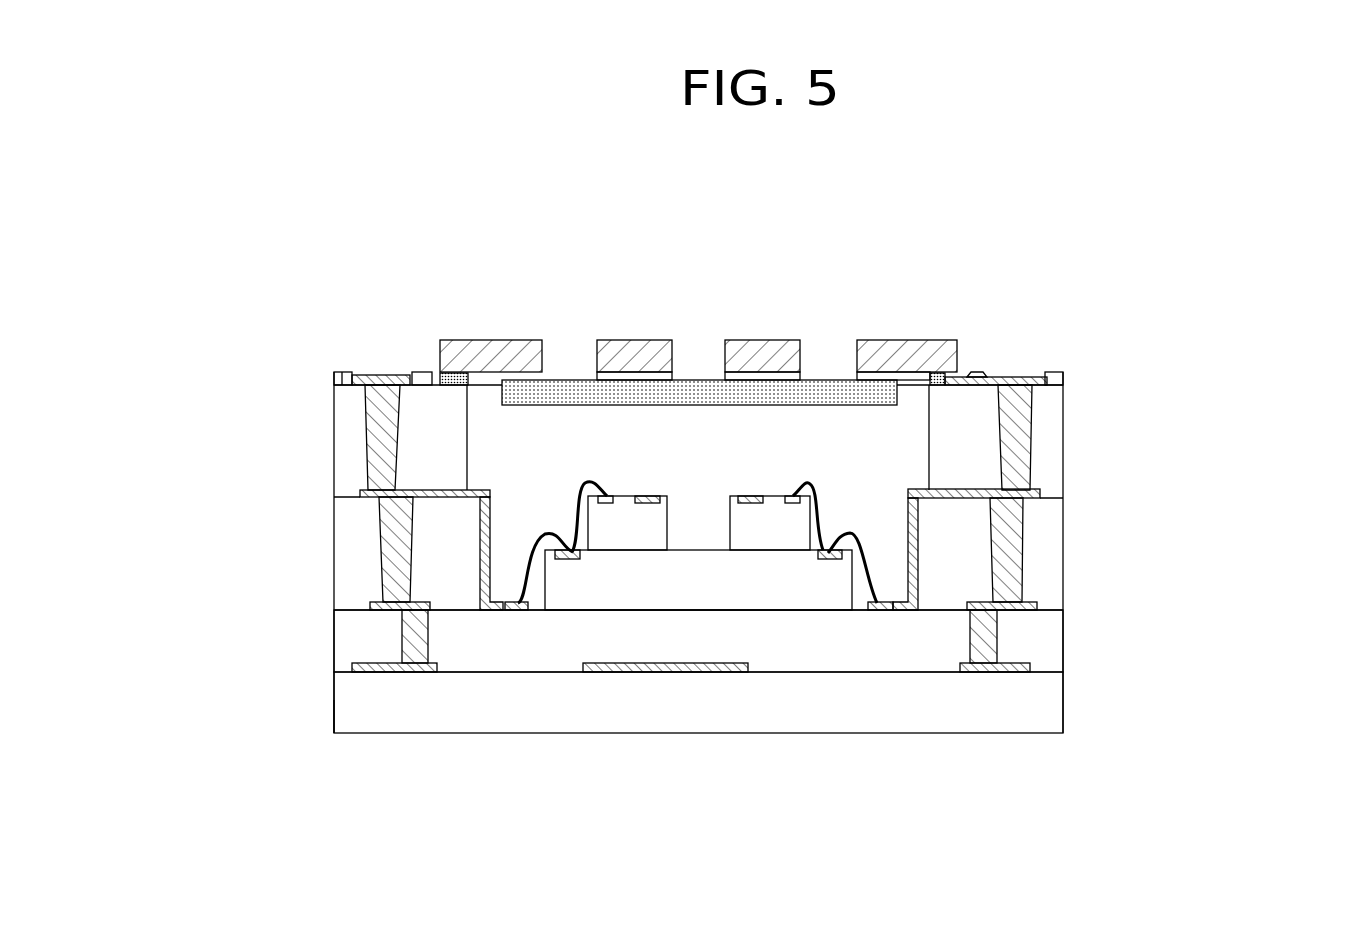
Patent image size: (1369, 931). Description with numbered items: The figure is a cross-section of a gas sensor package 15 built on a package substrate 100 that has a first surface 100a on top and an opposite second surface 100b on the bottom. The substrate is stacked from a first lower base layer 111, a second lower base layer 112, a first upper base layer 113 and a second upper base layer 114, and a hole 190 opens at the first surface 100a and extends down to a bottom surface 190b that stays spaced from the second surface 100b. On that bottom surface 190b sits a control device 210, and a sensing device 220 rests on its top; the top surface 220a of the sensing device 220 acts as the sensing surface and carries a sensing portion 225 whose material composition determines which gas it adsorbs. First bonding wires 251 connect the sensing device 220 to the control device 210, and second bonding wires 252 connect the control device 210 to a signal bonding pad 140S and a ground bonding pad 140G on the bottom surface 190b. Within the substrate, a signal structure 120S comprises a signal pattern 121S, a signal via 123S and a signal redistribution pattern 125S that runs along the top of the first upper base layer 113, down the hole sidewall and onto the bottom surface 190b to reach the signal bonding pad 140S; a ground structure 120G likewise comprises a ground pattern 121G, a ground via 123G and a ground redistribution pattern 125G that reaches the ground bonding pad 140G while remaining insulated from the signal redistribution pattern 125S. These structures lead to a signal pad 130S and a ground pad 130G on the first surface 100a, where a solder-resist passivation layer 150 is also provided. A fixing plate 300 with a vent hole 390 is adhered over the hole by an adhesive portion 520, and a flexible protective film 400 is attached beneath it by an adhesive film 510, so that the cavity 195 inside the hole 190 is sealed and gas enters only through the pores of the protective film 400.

The gas sensor package 15 is at (1170, 258).
The package substrate 100 is at (1070, 385).
The first surface 100a is at (342, 372).
The second surface 100b is at (346, 733).
The first lower base layer 111 is at (1052, 702).
The second lower base layer 112 is at (1052, 642).
The first upper base layer 113 is at (1052, 577).
The second upper base layer 114 is at (1052, 402).
The signal structure 120S is at (232, 482).
The signal pattern 121S is at (358, 489).
The signal via 123S is at (386, 506).
The signal redistribution pattern 125S is at (484, 535).
The ground structure 120G is at (1170, 422).
The ground pattern 121G is at (963, 386).
The ground via 123G is at (1020, 462).
The ground redistribution pattern 125G is at (918, 523).
The signal pad 130S is at (383, 377).
The ground pad 130G is at (1003, 377).
The signal bonding pad 140S is at (515, 610).
The ground bonding pad 140G is at (883, 610).
The passivation layer 150 is at (1058, 372).
The hole 190 is at (912, 552).
The bottom surface of the hole 190b is at (790, 610).
The cavity 195 is at (768, 441).
The control device 210 is at (765, 592).
The sensing device 220 is at (607, 535).
The top surface of the sensing device 220a is at (665, 494).
The sensing portion 225 is at (652, 503).
The first bonding wire 251 is at (588, 484).
The second bonding wire 252 is at (531, 573).
The fixing plate 300 is at (915, 340).
The vent hole 390 is at (550, 362).
The protective film 400 is at (697, 392).
The adhesive film 510 is at (930, 378).
The adhesive portion 520 is at (455, 372).